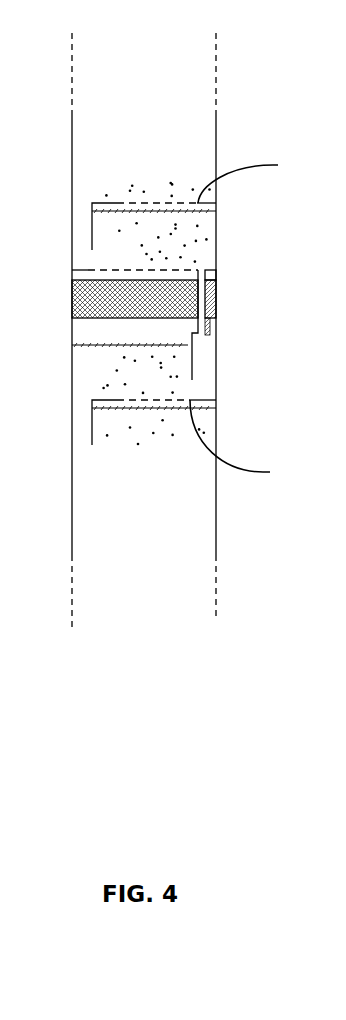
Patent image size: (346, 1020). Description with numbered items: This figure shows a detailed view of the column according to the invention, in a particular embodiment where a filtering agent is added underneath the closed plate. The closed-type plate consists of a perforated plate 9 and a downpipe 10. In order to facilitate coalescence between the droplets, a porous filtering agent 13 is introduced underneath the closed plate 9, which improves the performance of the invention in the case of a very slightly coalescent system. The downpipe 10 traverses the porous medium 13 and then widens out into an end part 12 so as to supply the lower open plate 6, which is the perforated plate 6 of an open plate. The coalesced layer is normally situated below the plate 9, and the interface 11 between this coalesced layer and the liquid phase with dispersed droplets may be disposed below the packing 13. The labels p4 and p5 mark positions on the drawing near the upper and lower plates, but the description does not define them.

The perforated plate 6 is at (210, 400).
The perforated plate 9 is at (80, 268).
The downpipe 10 is at (217, 296).
The interface 11 is at (85, 348).
The end part 12 is at (193, 365).
The porous filtering agent 13 is at (93, 308).
The position p4 is at (257, 177).
The position p5 is at (253, 444).